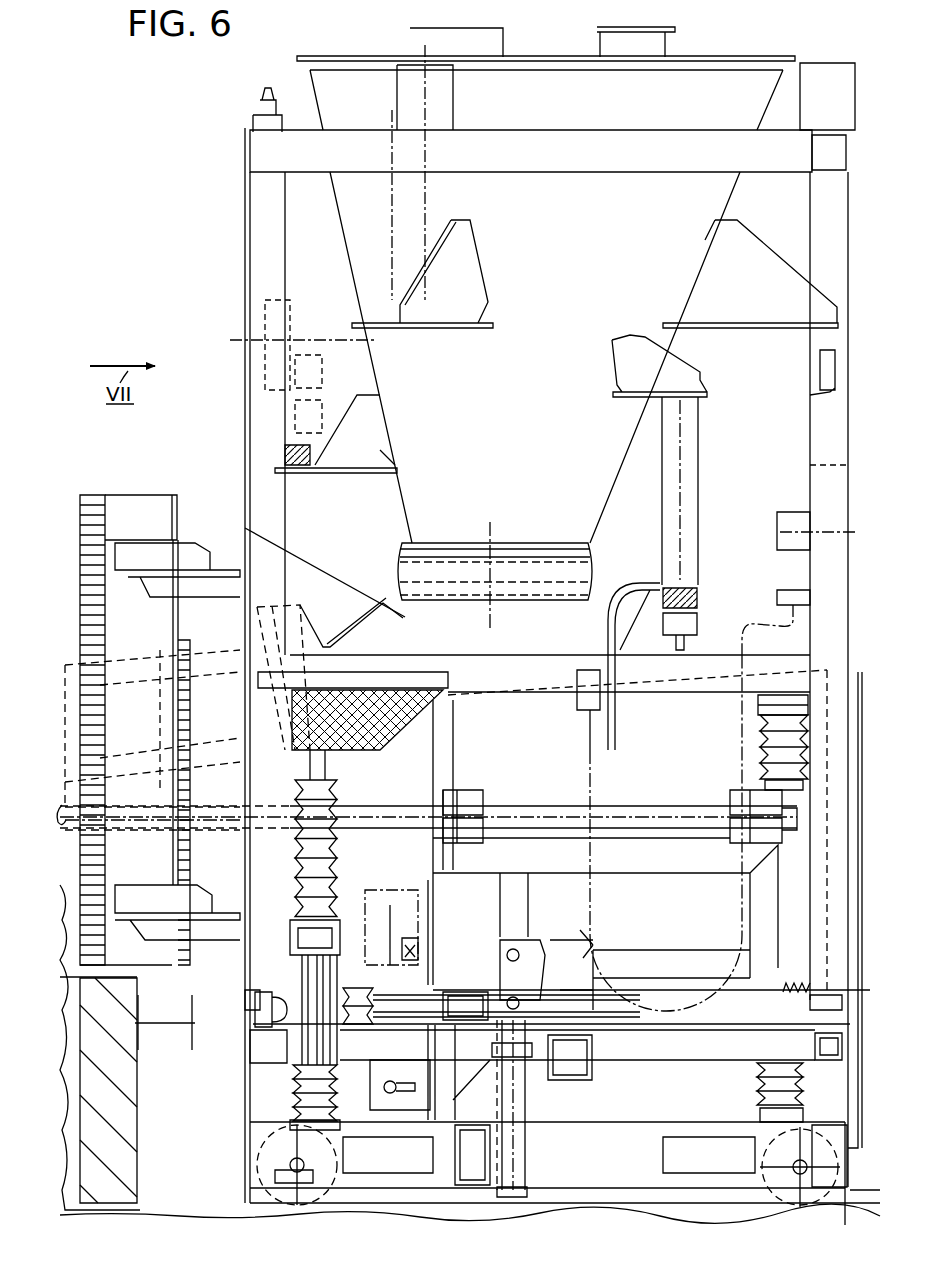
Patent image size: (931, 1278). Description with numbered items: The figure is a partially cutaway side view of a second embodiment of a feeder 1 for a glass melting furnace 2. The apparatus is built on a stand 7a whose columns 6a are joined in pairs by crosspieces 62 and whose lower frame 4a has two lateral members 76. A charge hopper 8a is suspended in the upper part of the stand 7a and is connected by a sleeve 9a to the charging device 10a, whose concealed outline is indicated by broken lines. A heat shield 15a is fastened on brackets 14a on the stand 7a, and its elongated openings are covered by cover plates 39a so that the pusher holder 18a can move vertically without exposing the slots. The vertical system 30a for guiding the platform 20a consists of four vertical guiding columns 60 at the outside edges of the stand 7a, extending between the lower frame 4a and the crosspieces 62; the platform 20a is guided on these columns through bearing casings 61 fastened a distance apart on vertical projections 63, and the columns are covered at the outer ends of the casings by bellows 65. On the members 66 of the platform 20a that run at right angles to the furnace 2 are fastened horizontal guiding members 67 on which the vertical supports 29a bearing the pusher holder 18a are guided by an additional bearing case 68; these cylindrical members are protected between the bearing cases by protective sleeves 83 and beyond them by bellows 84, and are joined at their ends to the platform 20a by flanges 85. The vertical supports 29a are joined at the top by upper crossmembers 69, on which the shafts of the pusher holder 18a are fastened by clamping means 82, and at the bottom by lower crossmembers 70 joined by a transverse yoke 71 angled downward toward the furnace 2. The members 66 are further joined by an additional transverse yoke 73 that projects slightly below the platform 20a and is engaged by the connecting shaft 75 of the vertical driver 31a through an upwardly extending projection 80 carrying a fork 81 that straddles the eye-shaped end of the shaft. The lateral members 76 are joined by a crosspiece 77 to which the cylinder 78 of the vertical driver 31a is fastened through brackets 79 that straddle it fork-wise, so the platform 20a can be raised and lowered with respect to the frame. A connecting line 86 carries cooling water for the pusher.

The feeder 1 is at (211, 128).
The stand 7a is at (211, 270).
The charge hopper 8a is at (484, 392).
The columns of the stand 6a is at (252, 425).
The brackets 14a is at (150, 582).
The heat shield 15a is at (143, 622).
The charging device 10a is at (301, 625).
The sleeve 9a is at (393, 570).
The crosspieces 62 is at (782, 677).
The vertical guiding columns 60 is at (810, 750).
The clamping means 82 is at (470, 785).
The connecting lines 86 is at (590, 737).
The pusher holder 18a is at (560, 804).
The bellows 65 is at (325, 855).
The vertical system 30a is at (347, 925).
The bearing casing 61 is at (340, 935).
The vertical projection 63 is at (340, 965).
The connecting shaft 75 is at (490, 940).
The transverse yoke 71 is at (473, 988).
The vertical supports 29a is at (515, 908).
The upper crossmembers 69 is at (641, 855).
The upwardly extending projection 80 is at (590, 945).
The fork 81 is at (593, 945).
The lower crossmembers 70 is at (660, 968).
The horizontal guiding members 67 is at (708, 968).
The bellows 84 is at (810, 993).
The bearing case 68 is at (820, 1015).
The flanges 85 is at (258, 1003).
The cover plates 39a is at (206, 967).
The transverse yoke 73 is at (558, 1083).
The platform 20a is at (635, 1064).
The members of the platform 66 is at (690, 1050).
The protective sleeves 83 is at (877, 1057).
The glass melting furnace 2 is at (148, 1134).
The vertical driver 31a is at (532, 1150).
The crosspiece 77 is at (473, 1173).
The brackets 79 is at (505, 1147).
The cylinder 78 is at (523, 1170).
The lower frame 4a is at (578, 1195).
The lateral members 76 is at (638, 1170).